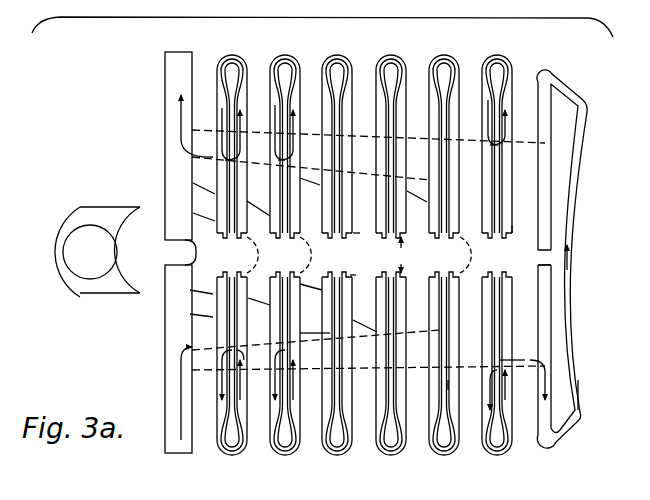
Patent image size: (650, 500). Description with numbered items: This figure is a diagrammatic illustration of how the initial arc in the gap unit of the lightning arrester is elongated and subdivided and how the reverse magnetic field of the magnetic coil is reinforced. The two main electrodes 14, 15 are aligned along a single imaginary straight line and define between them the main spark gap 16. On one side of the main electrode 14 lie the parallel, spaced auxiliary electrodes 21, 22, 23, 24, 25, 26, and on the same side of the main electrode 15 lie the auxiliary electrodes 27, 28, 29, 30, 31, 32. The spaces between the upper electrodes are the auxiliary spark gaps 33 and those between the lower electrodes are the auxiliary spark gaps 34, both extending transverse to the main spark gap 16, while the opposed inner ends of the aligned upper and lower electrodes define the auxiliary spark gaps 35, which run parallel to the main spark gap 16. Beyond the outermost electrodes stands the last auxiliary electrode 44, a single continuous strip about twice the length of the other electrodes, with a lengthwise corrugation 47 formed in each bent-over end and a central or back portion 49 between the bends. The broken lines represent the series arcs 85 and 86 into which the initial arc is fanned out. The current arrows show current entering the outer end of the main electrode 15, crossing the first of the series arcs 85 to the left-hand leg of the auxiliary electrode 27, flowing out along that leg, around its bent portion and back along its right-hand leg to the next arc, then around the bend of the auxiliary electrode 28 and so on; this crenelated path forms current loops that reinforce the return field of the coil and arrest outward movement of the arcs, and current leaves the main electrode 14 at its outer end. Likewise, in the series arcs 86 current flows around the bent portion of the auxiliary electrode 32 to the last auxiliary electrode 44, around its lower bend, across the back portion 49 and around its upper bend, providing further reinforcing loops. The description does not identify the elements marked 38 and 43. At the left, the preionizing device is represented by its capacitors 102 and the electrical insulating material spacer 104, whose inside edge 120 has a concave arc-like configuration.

The main electrode 14 is at (165, 119).
The main electrode 15 is at (165, 371).
The main spark gap 16 is at (186, 252).
The auxiliary electrode 21 is at (237, 55).
The auxiliary electrode 22 is at (288, 55).
The auxiliary electrode 23 is at (339, 55).
The auxiliary electrode 24 is at (391, 55).
The auxiliary electrode 25 is at (446, 55).
The auxiliary electrode 26 is at (497, 55).
The auxiliary electrode 27 is at (233, 456).
The auxiliary electrode 28 is at (286, 456).
The auxiliary electrode 29 is at (338, 456).
The auxiliary electrode 30 is at (391, 456).
The auxiliary electrode 31 is at (444, 456).
The auxiliary electrode 32 is at (499, 456).
The auxiliary spark gaps 33 is at (355, 235).
The auxiliary spark gaps 34 is at (358, 273).
The auxiliary spark gaps 35 is at (401, 255).
The tube leg 38 is at (523, 207).
The flow passage 43 is at (446, 380).
The last auxiliary electrode 44 is at (581, 378).
The corrugation 47 is at (538, 310).
The central portion 49 is at (565, 225).
The series arcs 85 is at (257, 342).
The series arcs 86 is at (465, 364).
The capacitors 102 is at (62, 256).
The electrical insulating material spacer 104 is at (61, 232).
The back edge 120 is at (120, 218).